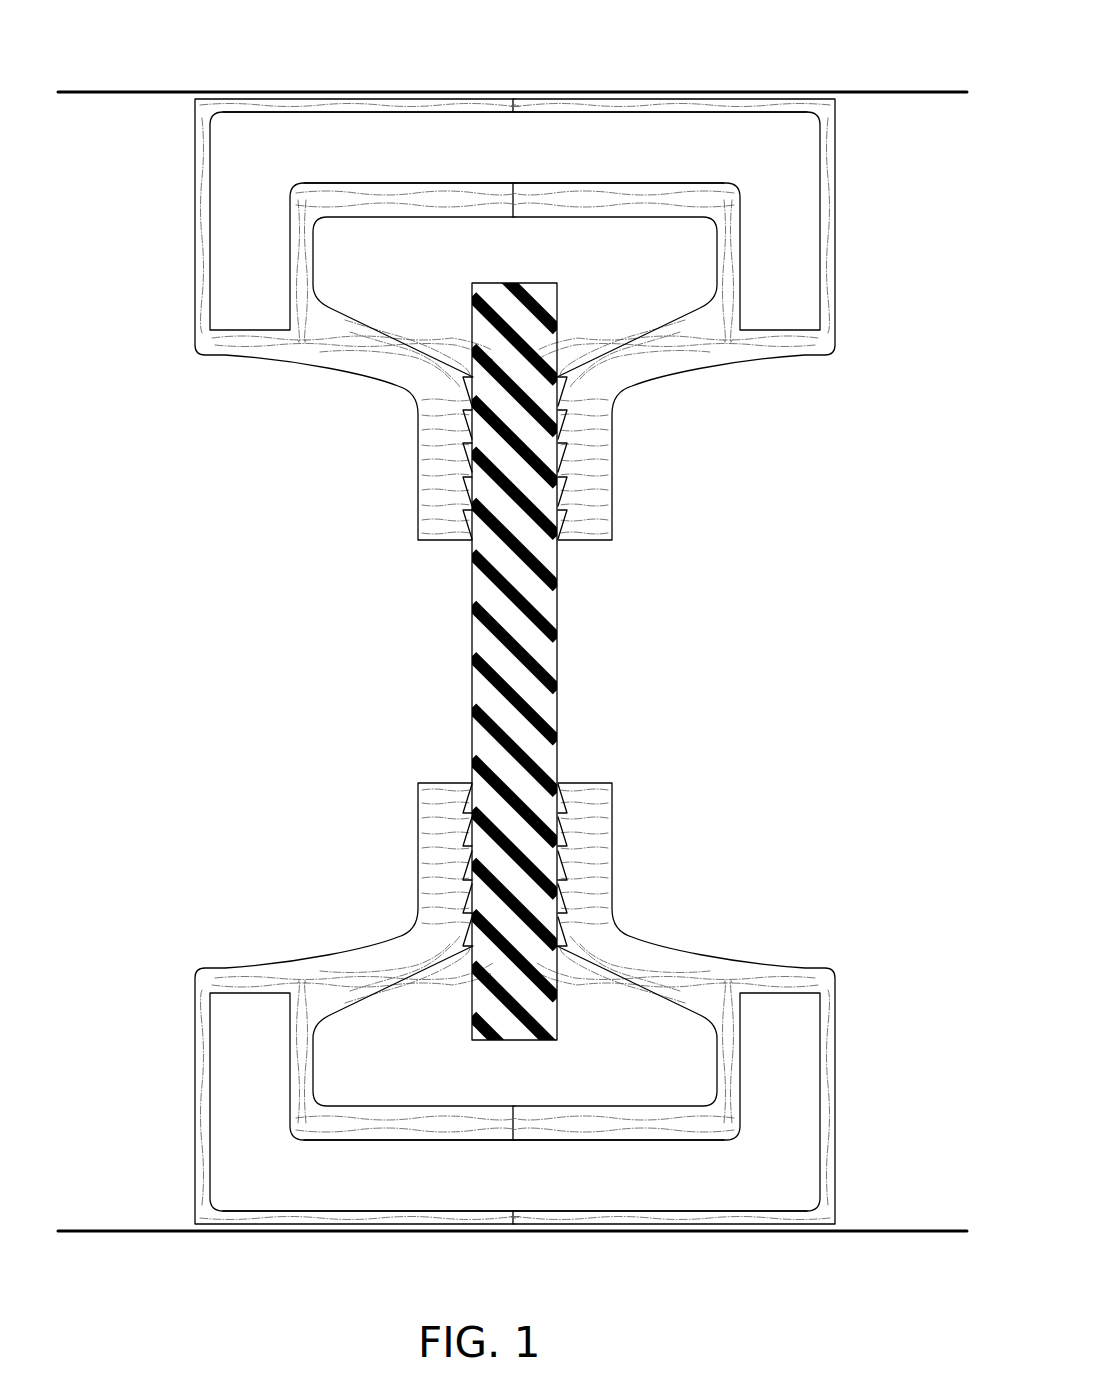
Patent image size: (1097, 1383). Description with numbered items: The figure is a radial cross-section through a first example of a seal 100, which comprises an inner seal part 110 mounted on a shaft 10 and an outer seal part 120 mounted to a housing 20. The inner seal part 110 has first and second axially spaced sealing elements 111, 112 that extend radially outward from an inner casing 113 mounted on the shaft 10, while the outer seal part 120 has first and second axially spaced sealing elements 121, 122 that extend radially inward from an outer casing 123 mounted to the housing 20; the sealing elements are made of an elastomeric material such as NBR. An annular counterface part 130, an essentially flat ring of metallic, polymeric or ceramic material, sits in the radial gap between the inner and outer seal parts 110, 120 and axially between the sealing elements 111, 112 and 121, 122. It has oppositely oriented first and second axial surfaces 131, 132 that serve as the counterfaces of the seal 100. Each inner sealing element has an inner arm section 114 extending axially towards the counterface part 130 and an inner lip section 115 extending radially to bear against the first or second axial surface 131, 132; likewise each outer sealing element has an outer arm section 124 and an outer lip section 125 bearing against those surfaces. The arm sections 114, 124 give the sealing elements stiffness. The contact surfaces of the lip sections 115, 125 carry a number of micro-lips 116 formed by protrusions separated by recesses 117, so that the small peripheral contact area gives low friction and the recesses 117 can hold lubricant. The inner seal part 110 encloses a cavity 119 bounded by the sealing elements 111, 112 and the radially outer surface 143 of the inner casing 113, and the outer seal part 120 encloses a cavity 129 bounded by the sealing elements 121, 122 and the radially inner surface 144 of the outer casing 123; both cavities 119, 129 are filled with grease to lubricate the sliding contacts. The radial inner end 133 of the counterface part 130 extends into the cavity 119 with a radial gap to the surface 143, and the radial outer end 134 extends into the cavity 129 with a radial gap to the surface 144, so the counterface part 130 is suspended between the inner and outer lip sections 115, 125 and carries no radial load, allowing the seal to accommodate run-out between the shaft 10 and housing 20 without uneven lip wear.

The shaft 10 is at (877, 1233).
The housing 20 is at (157, 92).
The seal 100 is at (971, 621).
The inner seal part 110 is at (182, 1240).
The first sealing element of the inner seal part 111 is at (285, 898).
The second sealing element of the inner seal part 112 is at (745, 898).
The inner casing 113 is at (545, 1170).
The inner arm section 114 is at (400, 958).
The inner lip section 115 is at (440, 866).
The micro-lips 116 is at (470, 537).
The recesses 117 is at (558, 478).
The cavity of the inner seal part 119 is at (652, 1048).
The outer seal part 120 is at (853, 82).
The first sealing element of the outer seal part 121 is at (349, 406).
The second sealing element of the outer seal part 122 is at (661, 406).
The outer casing 123 is at (460, 148).
The outer arm section 124 is at (362, 343).
The outer lip section 125 is at (440, 442).
The cavity of the outer seal part 129 is at (401, 282).
The counterface part 130 is at (530, 735).
The first axial surface 131 is at (461, 657).
The second axial surface 132 is at (568, 657).
The radial inner end of the counterface element 133 is at (513, 1052).
The radial outer end of the counterface element 134 is at (513, 271).
The radially outer surface of the inner casing 143 is at (513, 1090).
The radially inner surface of the outer casing 144 is at (513, 233).